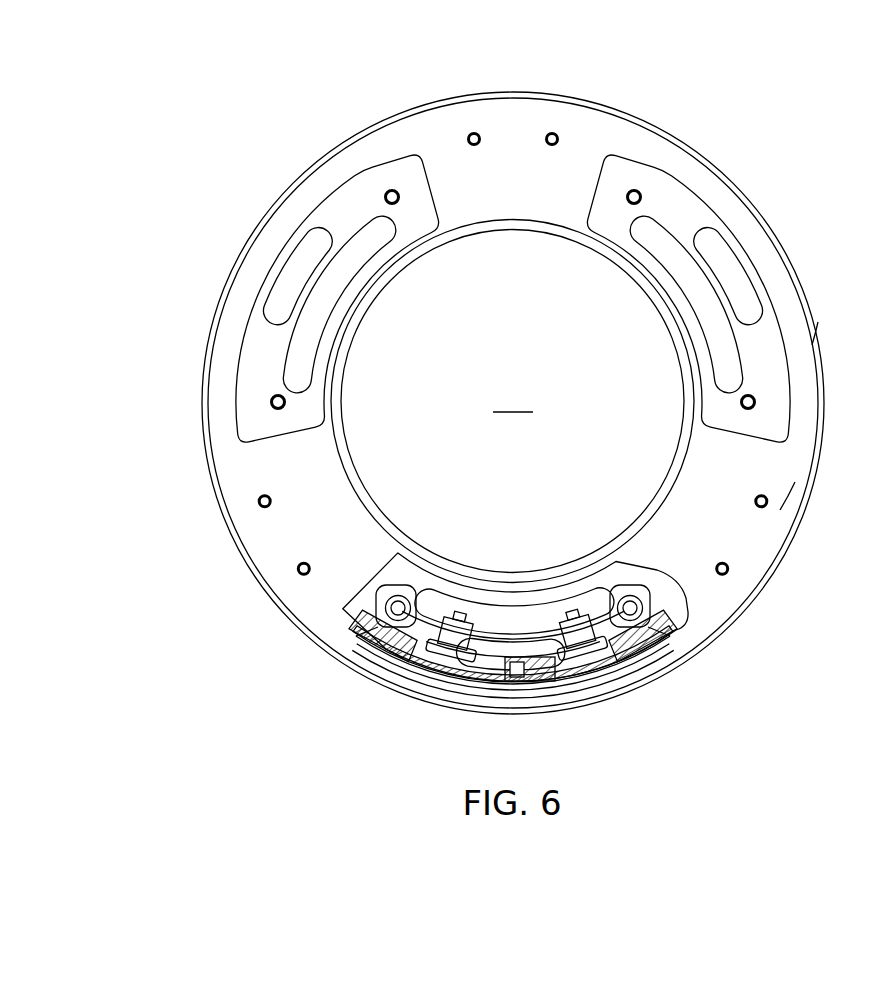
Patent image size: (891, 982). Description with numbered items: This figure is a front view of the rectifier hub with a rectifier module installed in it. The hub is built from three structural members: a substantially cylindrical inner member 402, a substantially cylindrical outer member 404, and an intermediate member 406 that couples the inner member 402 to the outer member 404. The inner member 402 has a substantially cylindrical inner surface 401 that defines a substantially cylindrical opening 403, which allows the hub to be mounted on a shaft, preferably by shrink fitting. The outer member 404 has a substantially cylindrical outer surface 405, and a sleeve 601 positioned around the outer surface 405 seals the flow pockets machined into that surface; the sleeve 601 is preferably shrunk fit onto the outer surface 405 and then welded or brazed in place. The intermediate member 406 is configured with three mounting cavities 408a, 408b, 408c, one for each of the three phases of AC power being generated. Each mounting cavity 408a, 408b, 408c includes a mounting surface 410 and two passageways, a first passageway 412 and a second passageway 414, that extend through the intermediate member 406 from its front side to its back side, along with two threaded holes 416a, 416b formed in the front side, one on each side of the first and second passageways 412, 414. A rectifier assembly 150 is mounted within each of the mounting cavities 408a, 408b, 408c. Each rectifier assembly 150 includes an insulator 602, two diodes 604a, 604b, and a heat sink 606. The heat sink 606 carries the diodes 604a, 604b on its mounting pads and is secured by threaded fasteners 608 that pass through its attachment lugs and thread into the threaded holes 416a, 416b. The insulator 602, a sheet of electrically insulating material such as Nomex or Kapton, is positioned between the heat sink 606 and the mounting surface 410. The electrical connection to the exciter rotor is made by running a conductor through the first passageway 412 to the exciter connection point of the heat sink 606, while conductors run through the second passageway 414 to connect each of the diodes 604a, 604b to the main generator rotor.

The rectifier assembly 150 is at (624, 680).
The substantially cylindrical inner surface 401 is at (461, 240).
The substantially cylindrical inner member 402 is at (388, 280).
The substantially cylindrical opening 403 is at (512, 401).
The substantially cylindrical outer member 404 is at (805, 268).
The substantially cylindrical outer surface 405 is at (818, 322).
The intermediate member 406 is at (795, 482).
The mounting cavity 408a is at (690, 200).
The mounting cavity 408b is at (655, 576).
The mounting cavity 408c is at (250, 355).
The mounting surface 410 is at (366, 170).
The first passageway 412 is at (296, 248).
The second passageway 414 is at (323, 345).
The threaded hole 416a is at (403, 198).
The threaded hole 416b is at (625, 198).
The sleeve 601 is at (204, 381).
The insulator 602 is at (403, 667).
The diode 604a is at (440, 672).
The diode 604b is at (584, 672).
The heat sink 606 is at (378, 585).
The threaded fastener 608 is at (405, 592).